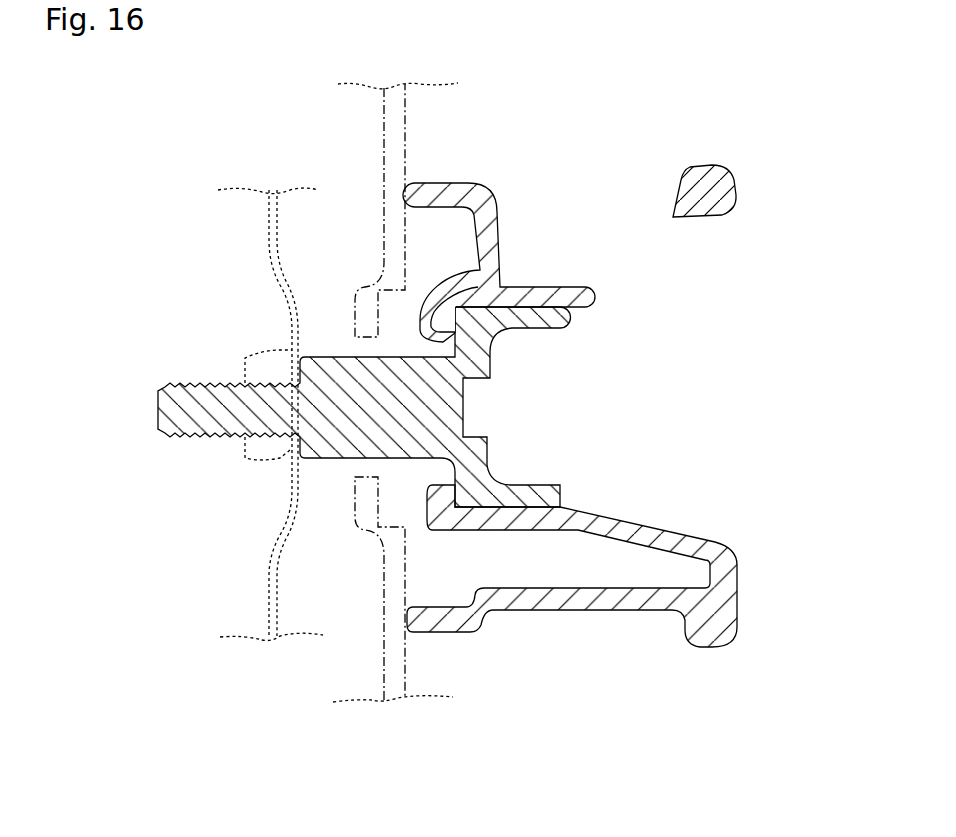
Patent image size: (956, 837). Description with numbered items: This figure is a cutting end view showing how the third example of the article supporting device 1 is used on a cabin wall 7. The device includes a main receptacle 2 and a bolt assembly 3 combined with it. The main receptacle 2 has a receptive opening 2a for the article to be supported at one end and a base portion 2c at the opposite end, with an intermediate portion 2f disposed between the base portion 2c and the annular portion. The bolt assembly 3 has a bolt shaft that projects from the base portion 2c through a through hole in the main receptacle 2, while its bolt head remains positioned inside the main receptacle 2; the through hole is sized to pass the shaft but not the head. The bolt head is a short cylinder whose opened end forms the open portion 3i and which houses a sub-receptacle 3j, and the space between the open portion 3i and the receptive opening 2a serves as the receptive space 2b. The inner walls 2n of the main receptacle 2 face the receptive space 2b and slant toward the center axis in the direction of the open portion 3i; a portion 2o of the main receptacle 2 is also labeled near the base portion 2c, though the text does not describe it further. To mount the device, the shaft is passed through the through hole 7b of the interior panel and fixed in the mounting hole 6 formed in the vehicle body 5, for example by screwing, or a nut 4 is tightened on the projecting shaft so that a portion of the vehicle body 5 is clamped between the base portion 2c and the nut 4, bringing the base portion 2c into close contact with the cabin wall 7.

The article supporting device 1 is at (736, 177).
The main receptacle 2 is at (742, 627).
The receptive opening 2a is at (680, 273).
The receptive space 2b is at (648, 427).
The base portion 2c is at (436, 182).
The intermediate portion 2f is at (584, 611).
The inner walls 2n is at (640, 518).
The hook portion of wheel 2o is at (460, 272).
The bolt assembly 3 is at (187, 436).
The open portion 3i is at (542, 353).
The sub-receptacle 3j is at (533, 427).
The nut 4 is at (249, 362).
The vehicle body 5 is at (273, 547).
The mounting hole 6 is at (290, 443).
The cabin wall 7 is at (397, 700).
The through hole 7b is at (352, 470).